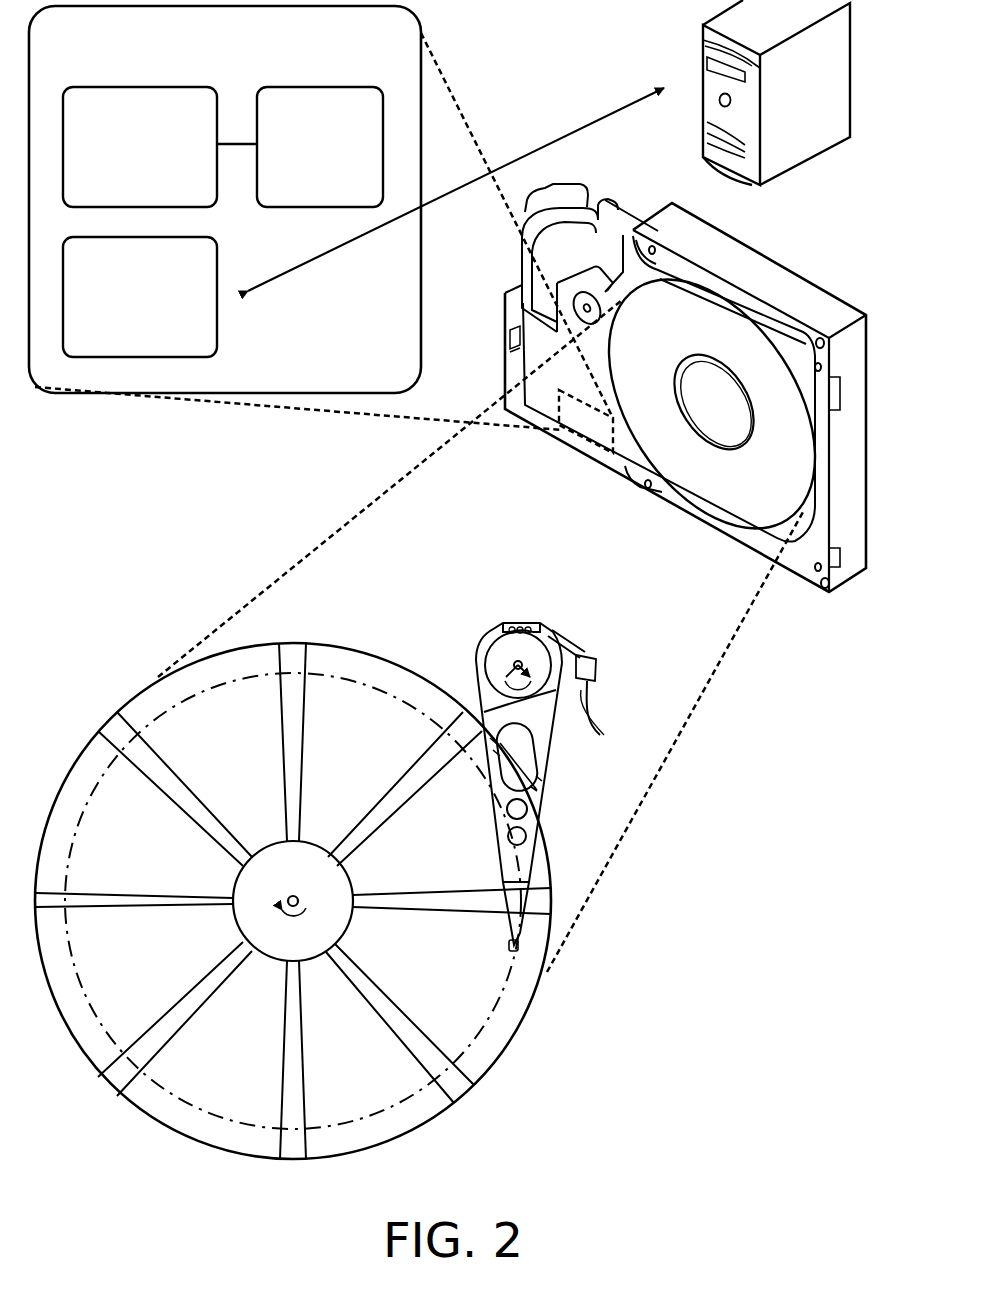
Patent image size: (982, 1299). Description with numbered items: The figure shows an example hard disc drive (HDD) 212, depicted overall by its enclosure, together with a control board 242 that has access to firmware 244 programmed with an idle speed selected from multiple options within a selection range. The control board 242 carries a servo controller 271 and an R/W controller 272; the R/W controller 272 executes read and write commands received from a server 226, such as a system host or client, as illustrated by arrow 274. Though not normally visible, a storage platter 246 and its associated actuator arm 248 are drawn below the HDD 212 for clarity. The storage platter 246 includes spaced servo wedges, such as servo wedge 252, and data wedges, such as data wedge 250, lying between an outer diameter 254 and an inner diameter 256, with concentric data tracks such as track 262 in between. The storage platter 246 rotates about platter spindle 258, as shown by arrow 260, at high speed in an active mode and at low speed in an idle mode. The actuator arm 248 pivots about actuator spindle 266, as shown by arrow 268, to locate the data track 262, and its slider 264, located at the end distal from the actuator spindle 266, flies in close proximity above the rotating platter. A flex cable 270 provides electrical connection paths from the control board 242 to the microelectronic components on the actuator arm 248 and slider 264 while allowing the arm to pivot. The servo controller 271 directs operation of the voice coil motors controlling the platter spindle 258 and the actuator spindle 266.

The hard disc drive (HDD) 212 is at (686, 347).
The server 226 is at (787, 119).
The control board 242 is at (205, 74).
The firmware 244 is at (299, 174).
The storage platter 246 is at (313, 904).
The actuator arm 248 is at (543, 766).
The data wedge 250 is at (179, 1147).
The servo wedge 252 is at (473, 1105).
The outer diameter 254 is at (389, 654).
The inner diameter 256 is at (230, 882).
The platter spindle 258 is at (289, 896).
The arrow 260 is at (300, 910).
The data track 262 is at (487, 1011).
The slider 264 is at (507, 947).
The actuator spindle 266 is at (491, 638).
The arrow 268 is at (552, 632).
The flex cable 270 is at (620, 745).
The servo controller 271 is at (119, 189).
The R/W controller 272 is at (119, 339).
The arrow 274 is at (540, 107).